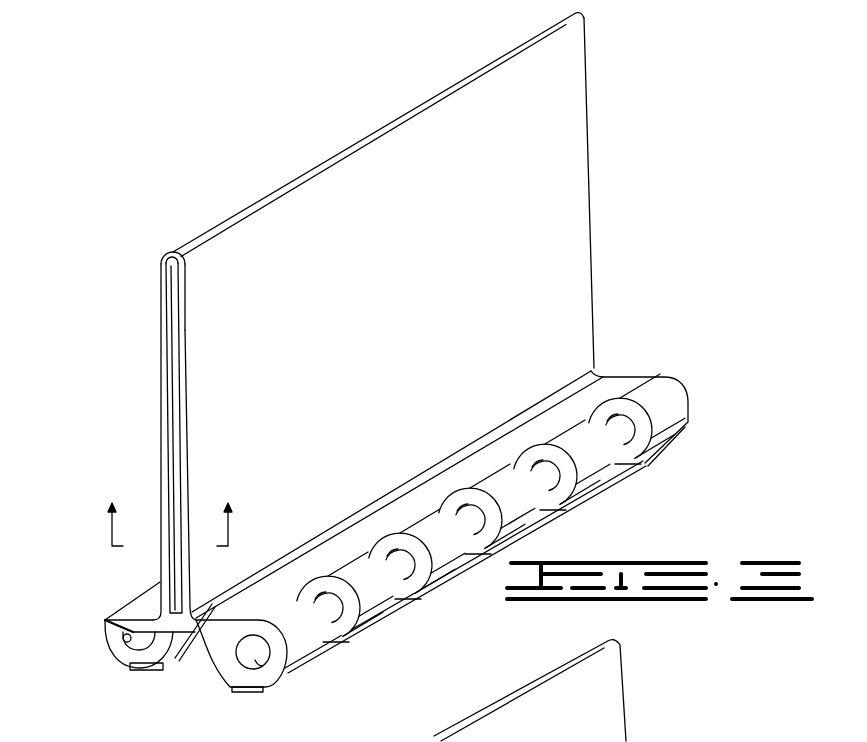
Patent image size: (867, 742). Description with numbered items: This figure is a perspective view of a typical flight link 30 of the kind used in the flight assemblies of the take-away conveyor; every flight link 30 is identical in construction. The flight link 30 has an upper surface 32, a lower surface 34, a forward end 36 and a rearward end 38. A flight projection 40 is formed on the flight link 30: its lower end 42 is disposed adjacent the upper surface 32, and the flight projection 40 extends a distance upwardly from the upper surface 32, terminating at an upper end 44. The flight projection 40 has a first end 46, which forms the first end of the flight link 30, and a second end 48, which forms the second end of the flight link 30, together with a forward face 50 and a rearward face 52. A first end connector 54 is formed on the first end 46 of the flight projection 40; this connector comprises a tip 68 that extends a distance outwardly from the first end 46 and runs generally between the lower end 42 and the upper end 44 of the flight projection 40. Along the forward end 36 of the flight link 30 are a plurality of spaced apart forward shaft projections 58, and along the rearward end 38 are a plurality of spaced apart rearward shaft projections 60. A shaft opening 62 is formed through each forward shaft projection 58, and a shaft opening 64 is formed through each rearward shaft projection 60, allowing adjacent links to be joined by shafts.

The flight link 30 is at (128, 384).
The upper surface 32 is at (147, 593).
The lower surface 34 is at (152, 652).
The forward end 36 is at (108, 616).
The rearward end 38 is at (297, 646).
The flight projection 40 is at (183, 414).
The lower end 42 is at (194, 636).
The upper end 44 is at (173, 252).
The first end 46 is at (184, 360).
The second end 48 is at (584, 90).
The forward face 50 is at (163, 411).
The rearward face 52 is at (558, 221).
The first end connector 54 is at (184, 298).
The forward shaft projection 58 is at (117, 643).
The rearward shaft projection 60 is at (278, 660).
The shaft opening 62 is at (135, 648).
The shaft opening 64 is at (261, 666).
The tip 68 is at (168, 290).